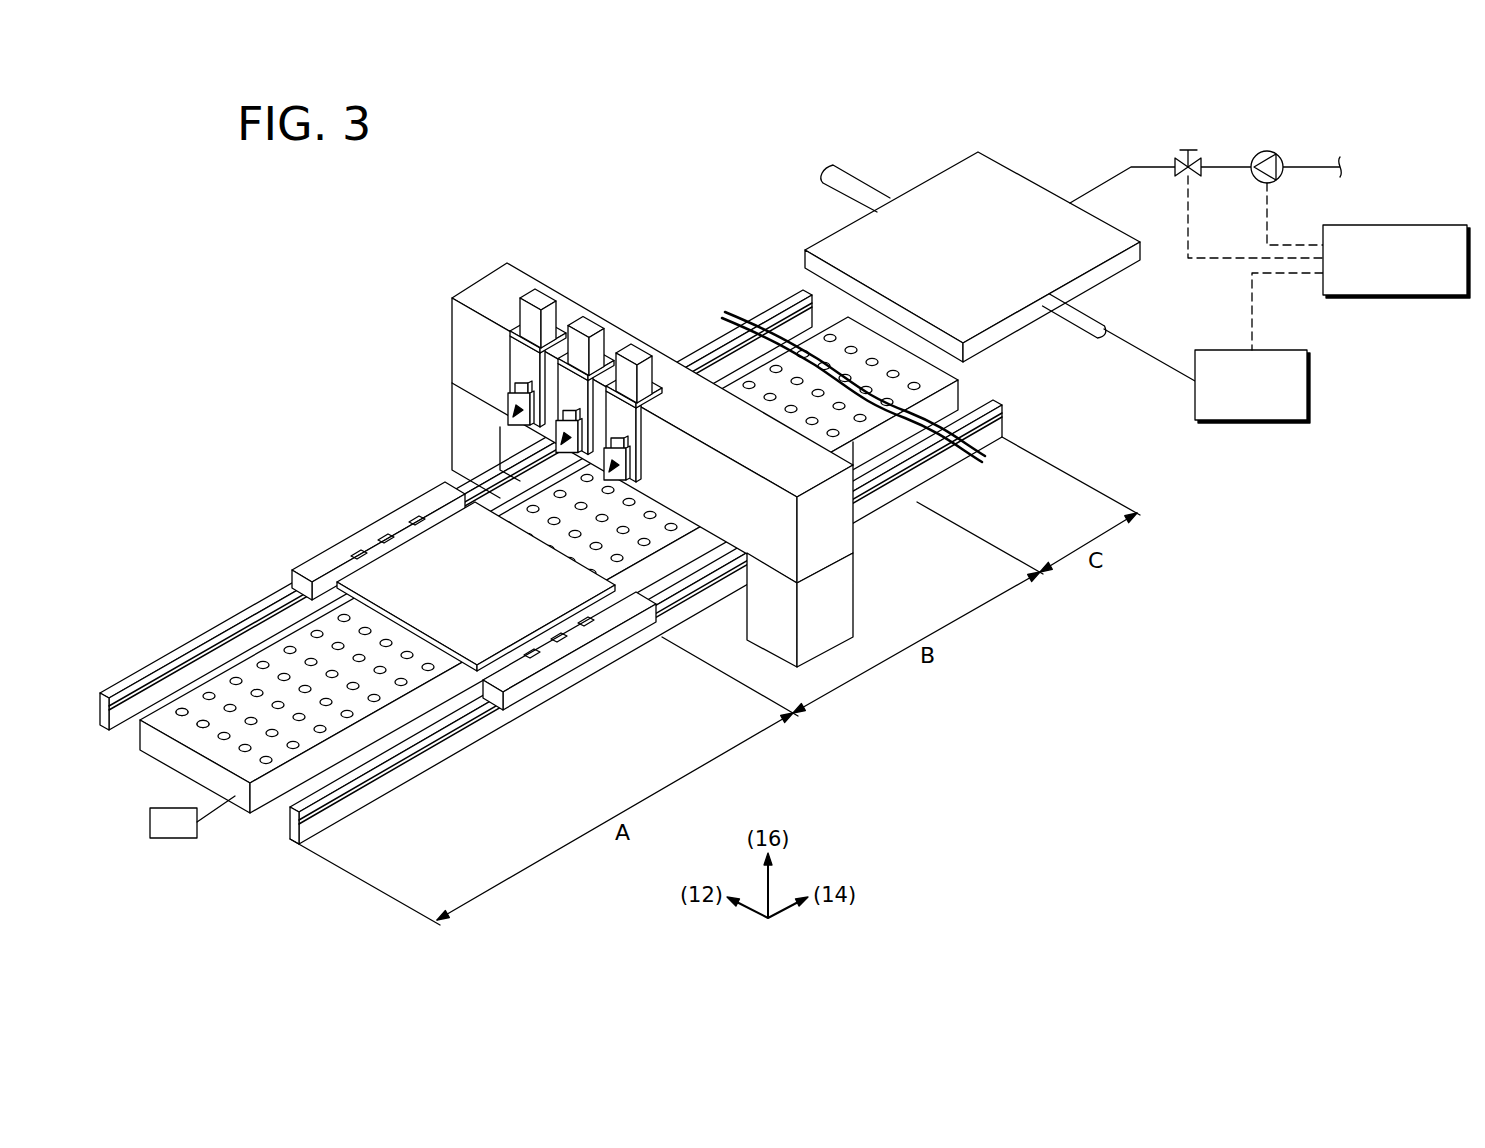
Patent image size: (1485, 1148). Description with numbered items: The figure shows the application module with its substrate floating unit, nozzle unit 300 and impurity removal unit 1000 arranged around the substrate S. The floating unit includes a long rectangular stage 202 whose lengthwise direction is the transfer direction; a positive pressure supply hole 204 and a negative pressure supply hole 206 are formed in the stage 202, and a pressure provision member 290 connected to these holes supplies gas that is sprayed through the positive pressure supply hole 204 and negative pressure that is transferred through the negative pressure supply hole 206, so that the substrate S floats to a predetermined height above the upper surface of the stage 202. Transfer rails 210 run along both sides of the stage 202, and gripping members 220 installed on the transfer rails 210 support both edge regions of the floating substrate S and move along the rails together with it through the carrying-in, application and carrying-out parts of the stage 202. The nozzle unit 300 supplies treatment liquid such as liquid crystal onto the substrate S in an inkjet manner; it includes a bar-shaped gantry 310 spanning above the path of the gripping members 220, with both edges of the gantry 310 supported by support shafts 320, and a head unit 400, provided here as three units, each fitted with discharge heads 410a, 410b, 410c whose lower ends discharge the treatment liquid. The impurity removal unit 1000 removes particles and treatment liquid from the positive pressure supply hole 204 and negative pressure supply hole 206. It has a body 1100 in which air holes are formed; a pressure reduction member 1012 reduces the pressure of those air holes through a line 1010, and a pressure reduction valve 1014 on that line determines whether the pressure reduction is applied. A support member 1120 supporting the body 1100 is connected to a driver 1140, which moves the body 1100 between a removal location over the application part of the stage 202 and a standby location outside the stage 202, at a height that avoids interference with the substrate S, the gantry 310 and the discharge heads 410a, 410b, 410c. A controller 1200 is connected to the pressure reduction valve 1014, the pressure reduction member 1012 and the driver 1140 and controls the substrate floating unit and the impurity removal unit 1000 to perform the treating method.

The stage 202 is at (534, 565).
The positive pressure supply hole 204 is at (180, 707).
The negative pressure supply hole 206 is at (202, 719).
The transfer rails 210 is at (460, 713).
The gripping members 220 is at (540, 662).
The pressure provision member 290 is at (178, 842).
The nozzle unit 300 is at (616, 434).
The gantry 310 is at (490, 288).
The support shafts 320 is at (840, 607).
The head unit 400 is at (486, 386).
The first print head 410a is at (508, 422).
The second print head 410b is at (558, 451).
The third print head 410c is at (606, 480).
The substrate S is at (373, 583).
The impurity removal unit 1000 is at (1106, 251).
The supply line 1010 is at (1322, 158).
The pressure reduction member 1012 is at (1265, 151).
The pressure reduction valve 1014 is at (1190, 150).
The body 1100 is at (915, 200).
The support member 1120 is at (1063, 303).
The driver 1140 is at (1310, 388).
The controller 1200 is at (1403, 225).